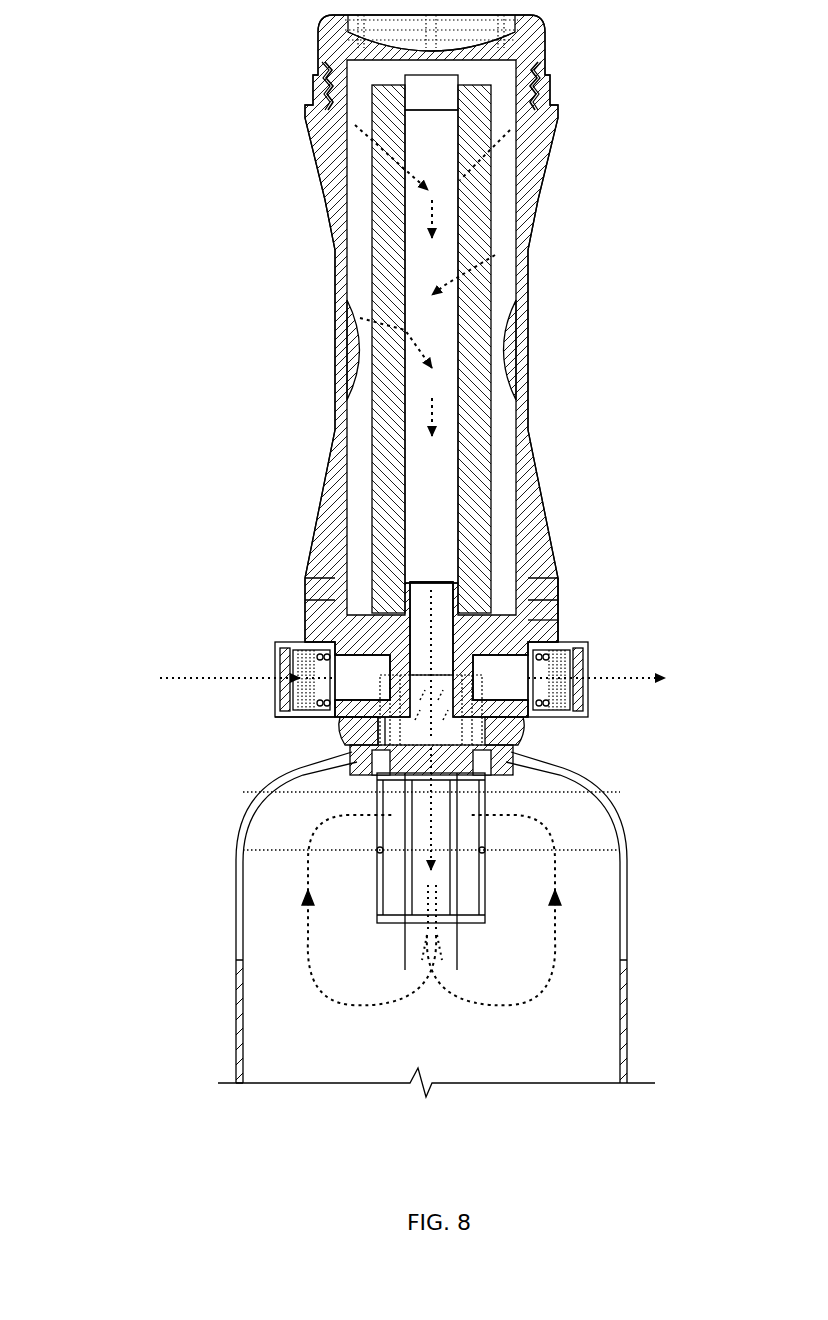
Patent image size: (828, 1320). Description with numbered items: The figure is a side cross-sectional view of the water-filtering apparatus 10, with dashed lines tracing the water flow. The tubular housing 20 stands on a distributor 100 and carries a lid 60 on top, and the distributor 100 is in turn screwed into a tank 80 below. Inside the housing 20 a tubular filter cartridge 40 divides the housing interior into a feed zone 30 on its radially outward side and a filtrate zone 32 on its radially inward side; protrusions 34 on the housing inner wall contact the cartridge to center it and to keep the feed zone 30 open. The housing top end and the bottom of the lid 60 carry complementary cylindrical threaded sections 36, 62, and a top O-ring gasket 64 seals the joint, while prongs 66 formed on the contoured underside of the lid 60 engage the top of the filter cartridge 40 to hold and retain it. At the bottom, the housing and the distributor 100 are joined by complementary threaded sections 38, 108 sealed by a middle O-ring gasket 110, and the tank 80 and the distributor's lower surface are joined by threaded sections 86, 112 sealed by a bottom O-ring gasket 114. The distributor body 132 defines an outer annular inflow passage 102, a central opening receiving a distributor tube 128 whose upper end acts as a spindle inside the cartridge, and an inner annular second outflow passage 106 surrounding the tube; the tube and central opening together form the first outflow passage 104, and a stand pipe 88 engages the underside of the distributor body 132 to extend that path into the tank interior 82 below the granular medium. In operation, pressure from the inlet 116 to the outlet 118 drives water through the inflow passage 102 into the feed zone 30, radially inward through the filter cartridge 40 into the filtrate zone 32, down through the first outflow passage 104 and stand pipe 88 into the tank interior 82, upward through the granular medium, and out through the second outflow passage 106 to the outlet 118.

The apparatus 10 is at (147, 133).
The housing 20 is at (335, 240).
The feed zone 30 is at (362, 262).
The filtrate zone 32 is at (434, 202).
The protrusions 34 is at (352, 350).
The threaded section 36 is at (320, 97).
The threaded section 38 is at (330, 618).
The filter cartridge 40 is at (405, 445).
The lid 60 is at (318, 22).
The threaded section 62 is at (326, 86).
The top O-ring gasket 64 is at (533, 62).
The prongs 66 is at (457, 85).
The tank 80 is at (237, 885).
The tank interior 82 is at (431, 920).
The threaded section 86 is at (345, 735).
The stand pipe 88 is at (458, 945).
The distributor 100 is at (556, 598).
The inflow passage 102 is at (362, 679).
The first outflow passage 104 is at (431, 628).
The second outflow passage 106 is at (500, 677).
The threaded section 108 is at (543, 589).
The middle O-ring gasket 110 is at (540, 625).
The threaded section 112 is at (381, 731).
The bottom O-ring gasket 114 is at (520, 735).
The inlet 116 is at (276, 668).
The outlet 118 is at (585, 660).
The distributor tube 128 is at (435, 585).
The distributor body 132 is at (298, 720).